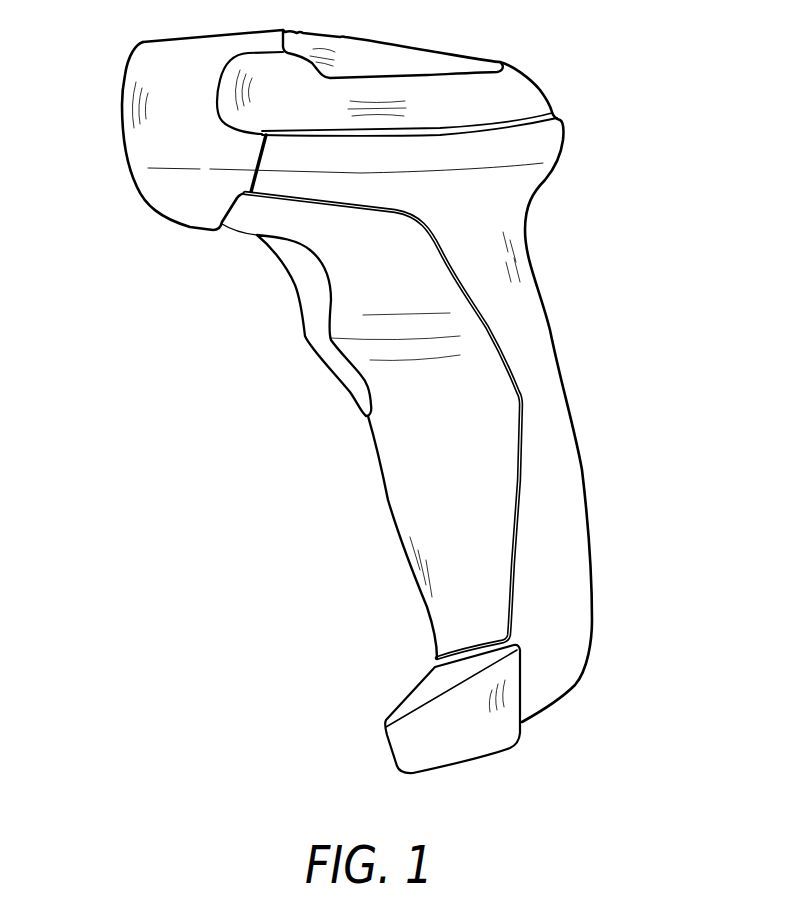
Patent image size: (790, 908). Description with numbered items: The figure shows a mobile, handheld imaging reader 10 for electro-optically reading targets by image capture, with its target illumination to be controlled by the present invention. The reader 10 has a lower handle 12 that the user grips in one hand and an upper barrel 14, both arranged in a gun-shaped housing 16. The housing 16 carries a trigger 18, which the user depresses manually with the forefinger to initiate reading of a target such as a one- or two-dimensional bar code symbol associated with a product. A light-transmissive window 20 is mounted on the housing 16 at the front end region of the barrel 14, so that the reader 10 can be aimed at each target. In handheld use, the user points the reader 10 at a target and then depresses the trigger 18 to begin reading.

The imaging reader 10 is at (370, 389).
The lower handle 12 is at (580, 467).
The upper barrel 14 is at (393, 46).
The gun-shaped housing 16 is at (579, 99).
The trigger 18 is at (318, 333).
The light-transmissive window 20 is at (120, 108).